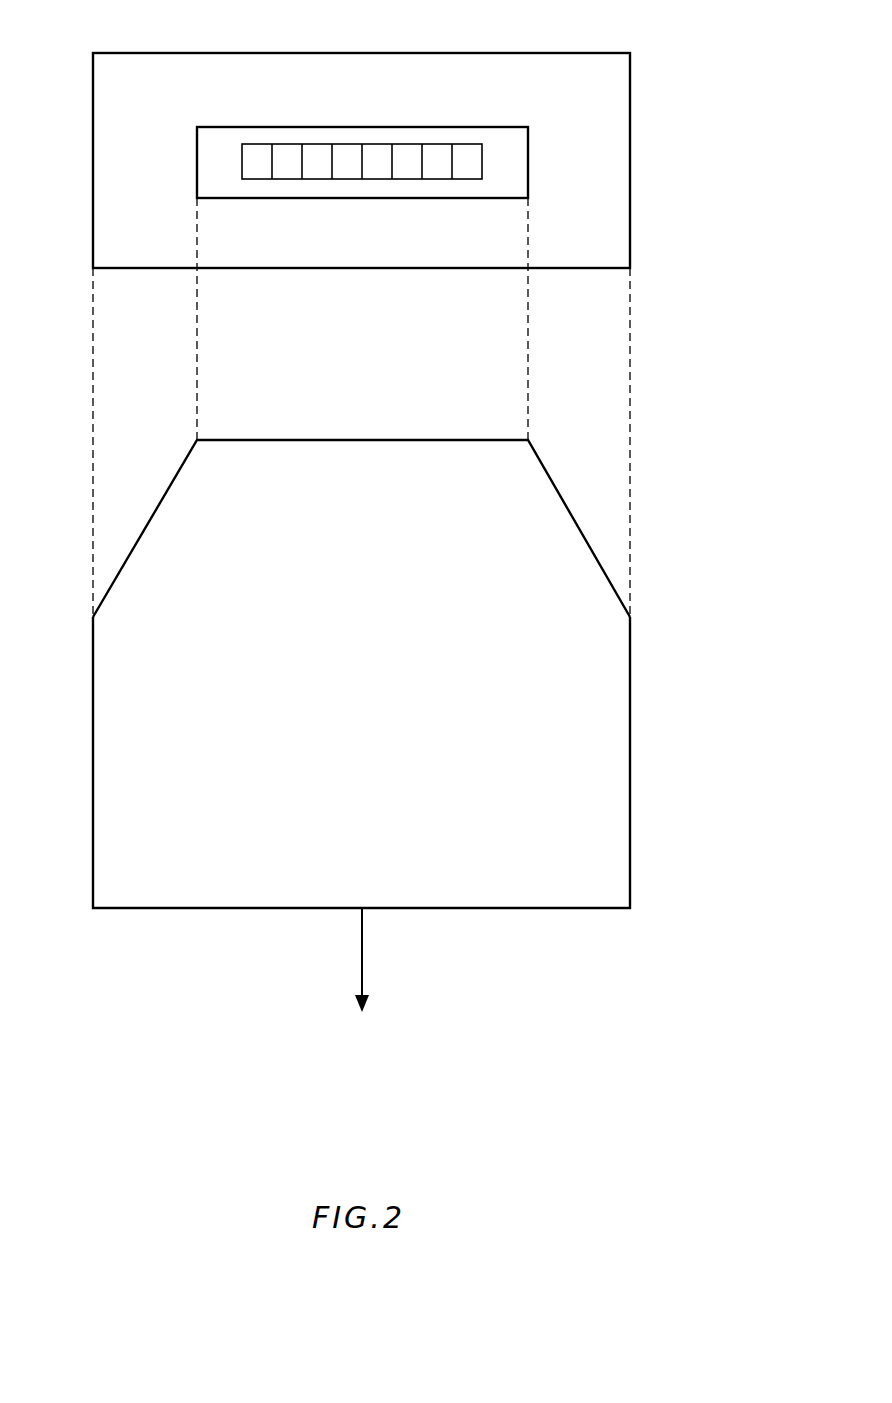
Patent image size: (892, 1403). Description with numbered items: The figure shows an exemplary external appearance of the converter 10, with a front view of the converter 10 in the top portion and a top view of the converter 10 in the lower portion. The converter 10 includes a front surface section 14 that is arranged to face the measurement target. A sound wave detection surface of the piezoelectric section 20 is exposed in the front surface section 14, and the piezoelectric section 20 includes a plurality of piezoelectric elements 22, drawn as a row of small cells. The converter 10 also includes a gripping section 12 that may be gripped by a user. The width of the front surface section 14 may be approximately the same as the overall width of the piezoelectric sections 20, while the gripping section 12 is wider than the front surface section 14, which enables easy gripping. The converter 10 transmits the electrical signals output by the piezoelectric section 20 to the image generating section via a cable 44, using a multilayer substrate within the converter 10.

The converter 10 is at (375, 1110).
The gripping section 12 is at (363, 53).
The front surface section 14 is at (446, 126).
The piezoelectric section 20 is at (379, 178).
The piezoelectric elements 22 is at (260, 152).
The cable 44 is at (363, 950).